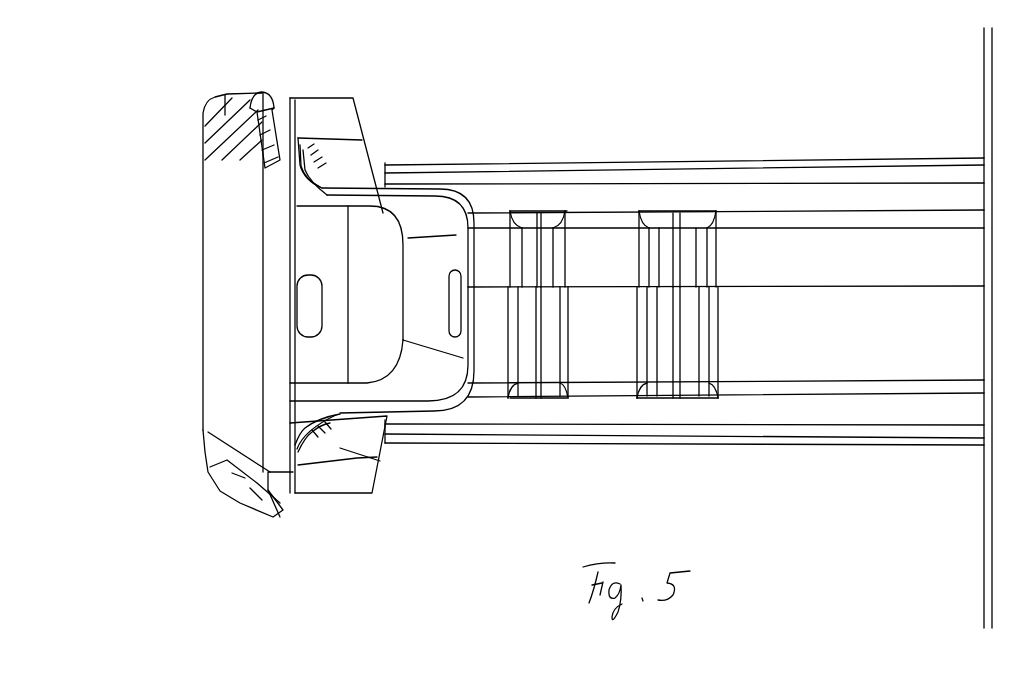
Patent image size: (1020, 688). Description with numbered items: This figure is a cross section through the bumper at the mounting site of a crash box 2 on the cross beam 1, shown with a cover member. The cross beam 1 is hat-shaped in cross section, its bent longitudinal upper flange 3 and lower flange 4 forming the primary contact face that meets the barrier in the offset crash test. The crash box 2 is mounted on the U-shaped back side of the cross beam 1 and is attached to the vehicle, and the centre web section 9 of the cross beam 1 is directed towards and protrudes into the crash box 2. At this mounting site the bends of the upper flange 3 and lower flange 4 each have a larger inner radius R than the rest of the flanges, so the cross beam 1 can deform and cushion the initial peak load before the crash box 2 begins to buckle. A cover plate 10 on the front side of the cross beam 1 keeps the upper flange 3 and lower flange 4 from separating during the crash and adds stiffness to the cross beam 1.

The cross beam 1 is at (298, 300).
The crash box 2 is at (643, 197).
The upper flange 3 is at (280, 133).
The lower flange 4 is at (303, 477).
The centre web section 9 is at (430, 262).
The cover plate 10 is at (215, 358).
The inner radius R is at (442, 497).